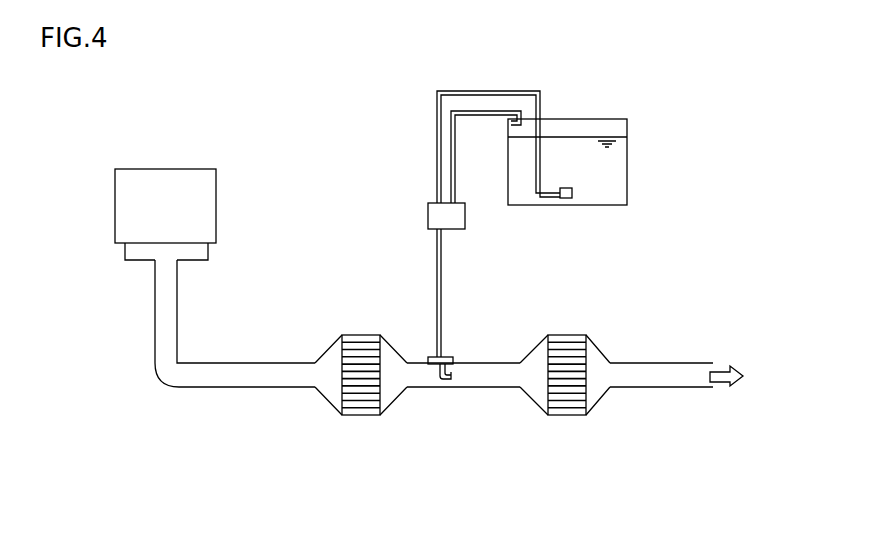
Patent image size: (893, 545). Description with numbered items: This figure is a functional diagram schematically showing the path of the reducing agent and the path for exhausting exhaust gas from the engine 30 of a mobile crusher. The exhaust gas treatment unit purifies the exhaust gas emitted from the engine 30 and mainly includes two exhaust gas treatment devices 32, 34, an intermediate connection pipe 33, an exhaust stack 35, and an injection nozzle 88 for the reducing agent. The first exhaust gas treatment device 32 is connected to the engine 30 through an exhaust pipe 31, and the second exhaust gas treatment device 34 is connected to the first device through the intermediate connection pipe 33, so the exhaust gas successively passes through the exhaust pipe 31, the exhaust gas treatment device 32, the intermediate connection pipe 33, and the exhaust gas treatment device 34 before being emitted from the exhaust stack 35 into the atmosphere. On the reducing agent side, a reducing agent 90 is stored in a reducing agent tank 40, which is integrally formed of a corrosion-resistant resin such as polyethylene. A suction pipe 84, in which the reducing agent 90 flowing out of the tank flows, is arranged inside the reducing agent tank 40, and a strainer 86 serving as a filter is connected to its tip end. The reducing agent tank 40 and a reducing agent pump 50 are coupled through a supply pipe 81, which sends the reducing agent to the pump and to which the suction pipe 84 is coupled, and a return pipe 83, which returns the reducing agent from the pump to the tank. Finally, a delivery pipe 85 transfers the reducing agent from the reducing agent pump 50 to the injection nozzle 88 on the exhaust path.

The engine 30 is at (128, 206).
The exhaust pipe 31 is at (231, 378).
The exhaust gas treatment device 32 is at (362, 405).
The intermediate connection pipe 33 is at (474, 378).
The exhaust gas treatment device 34 is at (570, 405).
The exhaust stack 35 is at (665, 378).
The reducing agent tank 40 is at (628, 142).
The reducing agent pump 50 is at (430, 216).
The supply pipe 81 is at (437, 160).
The return pipe 83 is at (456, 160).
The suction pipe 84 is at (543, 158).
The delivery pipe 85 is at (437, 294).
The strainer 86 is at (566, 200).
The injection nozzle 88 is at (445, 357).
The reducing agent 90 is at (616, 165).